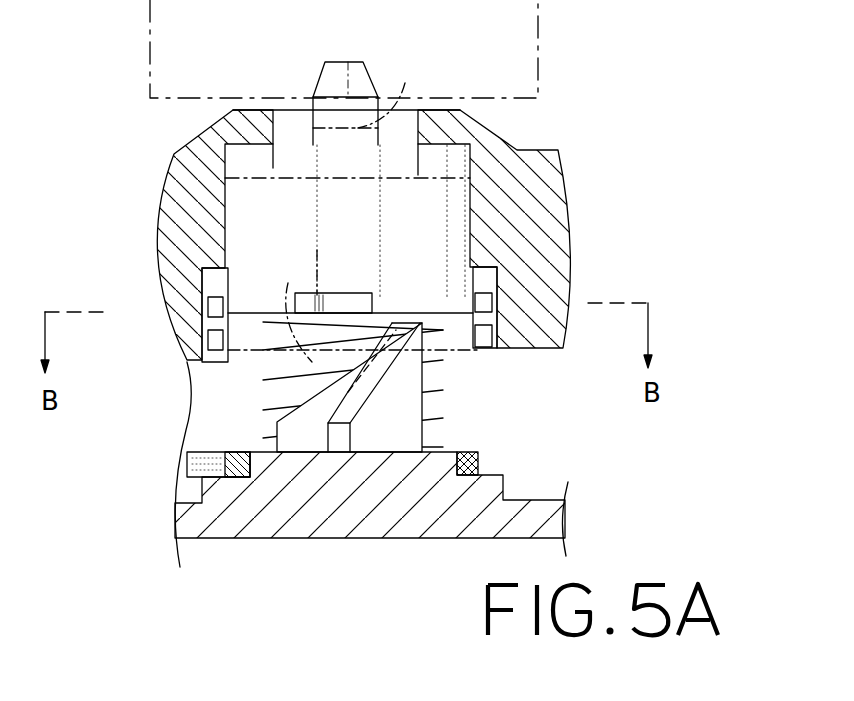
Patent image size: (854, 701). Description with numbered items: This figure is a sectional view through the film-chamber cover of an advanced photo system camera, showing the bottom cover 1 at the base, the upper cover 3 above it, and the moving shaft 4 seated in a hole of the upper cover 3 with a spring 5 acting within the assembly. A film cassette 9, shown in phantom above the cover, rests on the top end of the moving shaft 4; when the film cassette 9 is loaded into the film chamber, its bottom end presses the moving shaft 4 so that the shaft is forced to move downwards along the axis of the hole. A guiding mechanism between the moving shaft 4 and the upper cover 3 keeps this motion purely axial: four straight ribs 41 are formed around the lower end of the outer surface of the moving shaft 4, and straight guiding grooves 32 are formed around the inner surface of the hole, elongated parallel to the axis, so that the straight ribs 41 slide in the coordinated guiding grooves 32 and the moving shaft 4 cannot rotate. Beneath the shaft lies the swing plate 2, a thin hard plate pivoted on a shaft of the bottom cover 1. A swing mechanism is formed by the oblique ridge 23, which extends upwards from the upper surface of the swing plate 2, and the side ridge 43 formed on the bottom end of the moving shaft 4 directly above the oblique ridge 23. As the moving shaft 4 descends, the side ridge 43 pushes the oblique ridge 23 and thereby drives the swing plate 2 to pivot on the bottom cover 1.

The bottom cover 1 is at (370, 520).
The swing plate 2 is at (478, 460).
The upper cover 3 is at (183, 195).
The moving shaft 4 is at (356, 73).
The spring 5 is at (432, 418).
The film cassette 9 is at (175, 58).
The oblique ridge 23 is at (332, 415).
The straight guiding grooves 32 is at (217, 282).
The straight ribs 41 is at (213, 347).
The side ridge 43 is at (318, 297).